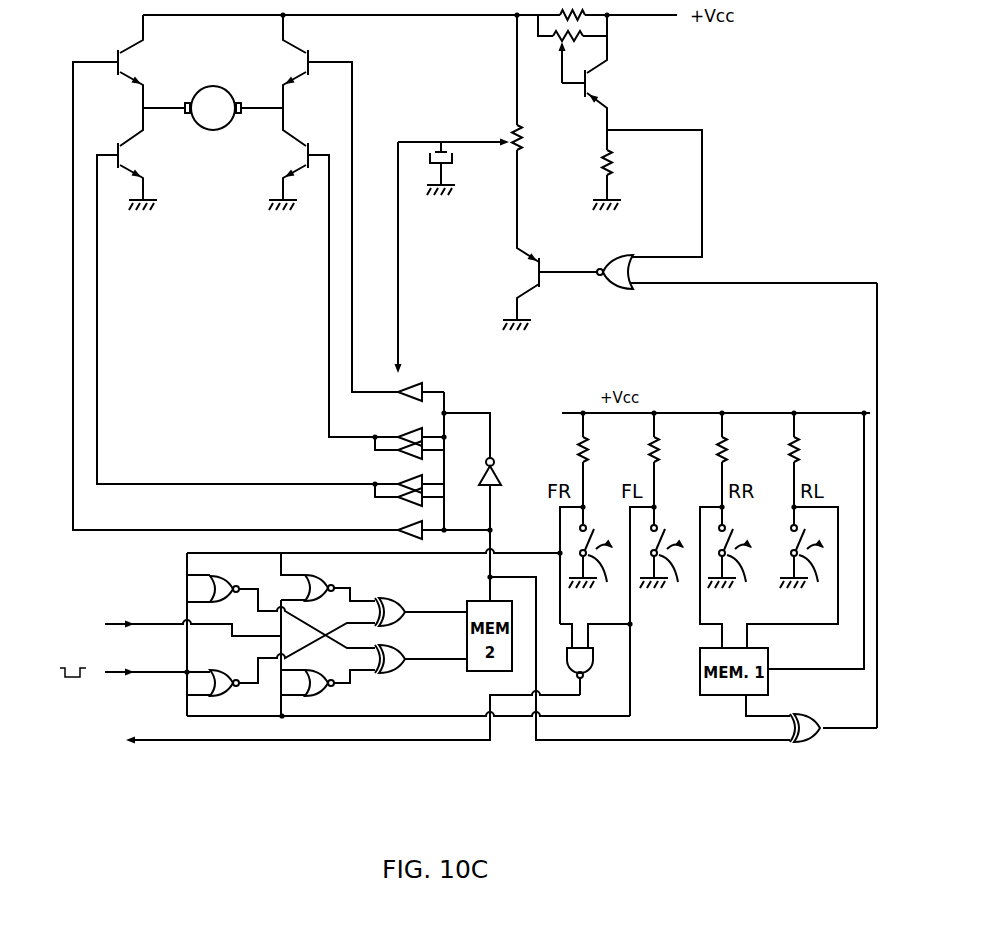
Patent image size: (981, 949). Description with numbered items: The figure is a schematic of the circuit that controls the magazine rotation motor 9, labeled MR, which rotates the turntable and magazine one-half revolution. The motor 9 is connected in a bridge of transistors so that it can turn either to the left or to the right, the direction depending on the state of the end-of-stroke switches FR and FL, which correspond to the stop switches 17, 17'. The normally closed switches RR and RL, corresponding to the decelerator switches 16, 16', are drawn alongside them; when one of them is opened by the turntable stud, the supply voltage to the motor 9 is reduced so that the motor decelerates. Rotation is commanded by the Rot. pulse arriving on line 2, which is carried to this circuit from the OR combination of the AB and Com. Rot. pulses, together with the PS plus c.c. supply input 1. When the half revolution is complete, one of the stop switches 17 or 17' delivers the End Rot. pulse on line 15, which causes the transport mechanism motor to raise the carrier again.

The motor 9 is at (213, 130).
The stop switch 17 is at (591, 565).
The stop switch 17' is at (662, 611).
The decelerator switch 16 is at (732, 577).
The decelerator switch 16' is at (792, 577).
The PS + c.c. input 1 is at (157, 624).
The line 2 is at (117, 669).
The line 15 is at (306, 720).